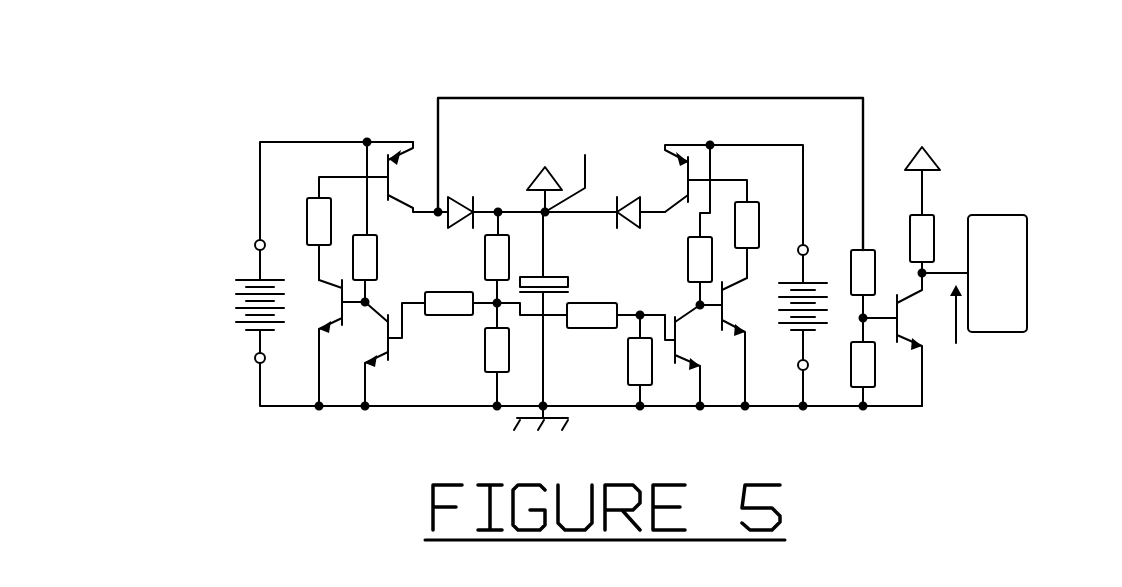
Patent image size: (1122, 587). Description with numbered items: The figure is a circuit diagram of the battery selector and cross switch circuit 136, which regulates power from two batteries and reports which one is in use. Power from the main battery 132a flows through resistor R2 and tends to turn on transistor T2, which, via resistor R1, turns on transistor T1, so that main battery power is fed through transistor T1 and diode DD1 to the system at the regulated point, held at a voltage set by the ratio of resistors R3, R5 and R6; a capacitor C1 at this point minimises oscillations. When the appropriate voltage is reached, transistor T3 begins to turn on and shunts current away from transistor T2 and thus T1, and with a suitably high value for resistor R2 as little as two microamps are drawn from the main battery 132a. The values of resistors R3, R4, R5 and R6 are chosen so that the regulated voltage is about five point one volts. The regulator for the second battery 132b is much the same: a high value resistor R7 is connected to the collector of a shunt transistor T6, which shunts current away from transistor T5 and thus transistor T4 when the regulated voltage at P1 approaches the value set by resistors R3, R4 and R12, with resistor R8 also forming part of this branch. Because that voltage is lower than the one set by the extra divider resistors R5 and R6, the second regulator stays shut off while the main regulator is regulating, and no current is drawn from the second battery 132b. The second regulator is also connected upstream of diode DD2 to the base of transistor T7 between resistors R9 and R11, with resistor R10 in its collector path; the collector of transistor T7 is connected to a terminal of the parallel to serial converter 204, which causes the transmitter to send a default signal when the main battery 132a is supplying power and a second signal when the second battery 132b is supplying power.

The battery selector and cross switch circuit 136 is at (978, 112).
The parallel to serial converter 204 is at (997, 215).
The main battery 132a is at (788, 330).
The second battery 132b is at (240, 313).
The resistor R1 is at (761, 240).
The resistor R2 is at (689, 273).
The resistor R3 is at (485, 270).
The resistor R4 is at (480, 369).
The resistor R5 is at (581, 330).
The resistor R6 is at (623, 362).
The resistor R7 is at (382, 270).
The resistor R8 is at (331, 228).
The resistor R9 is at (874, 283).
The resistor R10 is at (934, 210).
The resistor R11 is at (884, 376).
The resistor R12 is at (460, 294).
The transistor T1 is at (702, 190).
The transistor T2 is at (740, 344).
The transistor T3 is at (679, 357).
The transistor T4 is at (413, 177).
The transistor T5 is at (335, 345).
The shunt transistor T6 is at (388, 356).
The transistor T7 is at (932, 338).
The capacitor C1 is at (546, 321).
The diode DD1 is at (605, 201).
The diode DD2 is at (490, 203).
The regulated voltage point P1 is at (564, 173).